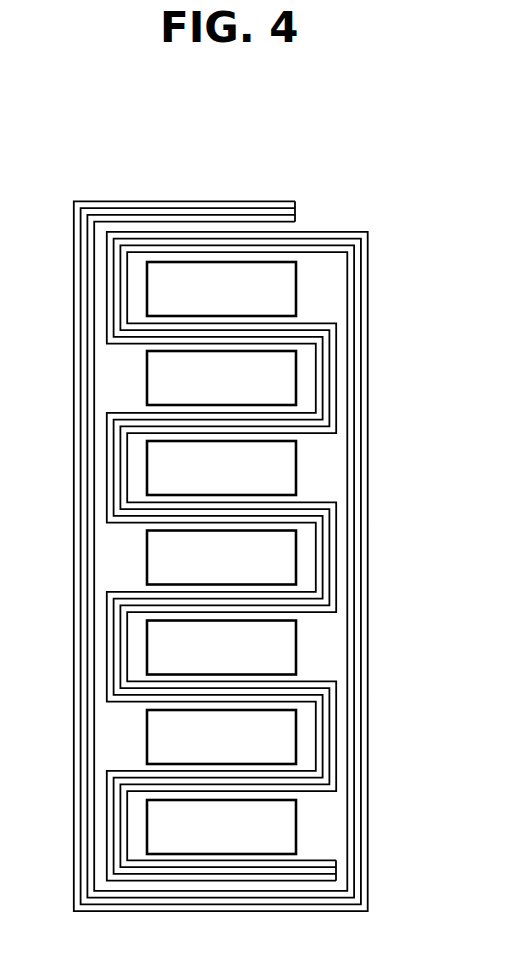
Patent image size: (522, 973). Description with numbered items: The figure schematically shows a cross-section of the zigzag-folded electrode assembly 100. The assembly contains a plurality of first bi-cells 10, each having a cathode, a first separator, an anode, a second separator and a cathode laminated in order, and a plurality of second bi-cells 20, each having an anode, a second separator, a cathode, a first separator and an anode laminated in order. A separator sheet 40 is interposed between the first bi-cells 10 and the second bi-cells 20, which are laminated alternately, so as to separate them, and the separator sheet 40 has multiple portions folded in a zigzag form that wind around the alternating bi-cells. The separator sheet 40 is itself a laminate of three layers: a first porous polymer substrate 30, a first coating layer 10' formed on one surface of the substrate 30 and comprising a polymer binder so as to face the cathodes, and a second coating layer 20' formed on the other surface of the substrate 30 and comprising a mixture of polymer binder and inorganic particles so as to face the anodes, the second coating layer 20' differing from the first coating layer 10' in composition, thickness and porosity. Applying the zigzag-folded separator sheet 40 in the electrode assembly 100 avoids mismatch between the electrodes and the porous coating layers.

The zigzag-folded electrode assembly 100 is at (202, 958).
The separator sheet 40 is at (208, 156).
The first coating layer 10' is at (221, 533).
The first porous polymer substrate 30 is at (248, 209).
The second coating layer 20' is at (220, 523).
The second bi-cell 20 is at (221, 558).
The first bi-cell 10 is at (221, 557).